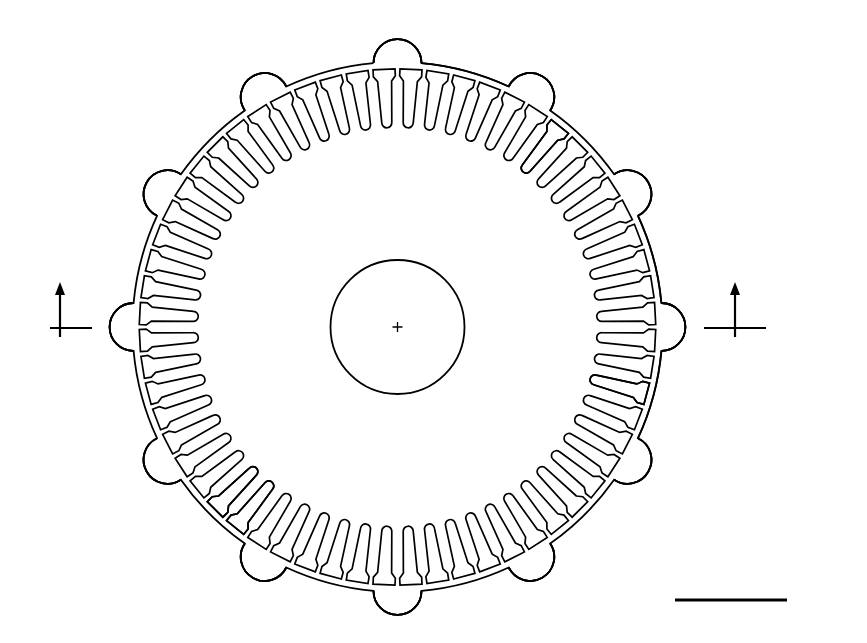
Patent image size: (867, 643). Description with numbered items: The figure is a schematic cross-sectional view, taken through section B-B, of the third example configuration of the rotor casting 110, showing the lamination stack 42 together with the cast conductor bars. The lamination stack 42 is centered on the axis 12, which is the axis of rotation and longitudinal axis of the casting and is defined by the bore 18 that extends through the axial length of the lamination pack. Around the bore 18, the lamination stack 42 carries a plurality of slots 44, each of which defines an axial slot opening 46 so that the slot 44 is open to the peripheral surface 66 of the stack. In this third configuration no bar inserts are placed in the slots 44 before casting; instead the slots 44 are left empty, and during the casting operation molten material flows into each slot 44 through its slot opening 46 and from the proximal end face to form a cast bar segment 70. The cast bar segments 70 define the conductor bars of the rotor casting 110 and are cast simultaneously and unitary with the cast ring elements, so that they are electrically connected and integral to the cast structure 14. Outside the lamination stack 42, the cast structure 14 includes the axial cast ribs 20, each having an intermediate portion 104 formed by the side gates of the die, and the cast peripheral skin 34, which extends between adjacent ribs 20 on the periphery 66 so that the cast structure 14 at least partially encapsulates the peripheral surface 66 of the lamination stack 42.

The axis 12 is at (400, 337).
The cast structure 14 is at (184, 120).
The bore 18 is at (352, 355).
The cast rib 20 is at (418, 49).
The intermediate portion of the axial rib 104 is at (398, 327).
The cast peripheral skin 34 is at (660, 397).
The lamination stack 42 is at (404, 214).
The slot 44 is at (598, 374).
The axial slot opening 46 is at (575, 152).
The peripheral surface 66 is at (652, 248).
The cast bar segment 70 is at (236, 217).
The rotor casting 110 is at (414, 315).